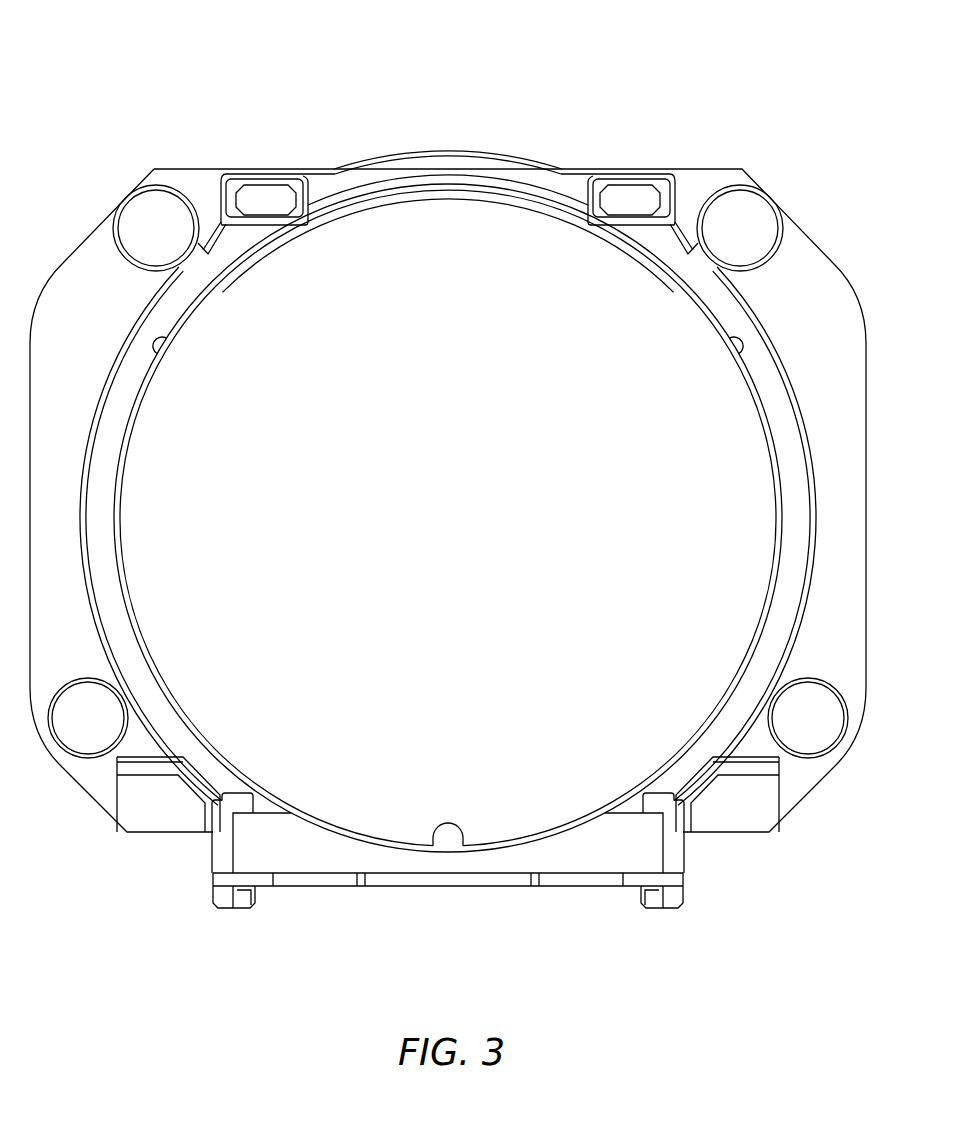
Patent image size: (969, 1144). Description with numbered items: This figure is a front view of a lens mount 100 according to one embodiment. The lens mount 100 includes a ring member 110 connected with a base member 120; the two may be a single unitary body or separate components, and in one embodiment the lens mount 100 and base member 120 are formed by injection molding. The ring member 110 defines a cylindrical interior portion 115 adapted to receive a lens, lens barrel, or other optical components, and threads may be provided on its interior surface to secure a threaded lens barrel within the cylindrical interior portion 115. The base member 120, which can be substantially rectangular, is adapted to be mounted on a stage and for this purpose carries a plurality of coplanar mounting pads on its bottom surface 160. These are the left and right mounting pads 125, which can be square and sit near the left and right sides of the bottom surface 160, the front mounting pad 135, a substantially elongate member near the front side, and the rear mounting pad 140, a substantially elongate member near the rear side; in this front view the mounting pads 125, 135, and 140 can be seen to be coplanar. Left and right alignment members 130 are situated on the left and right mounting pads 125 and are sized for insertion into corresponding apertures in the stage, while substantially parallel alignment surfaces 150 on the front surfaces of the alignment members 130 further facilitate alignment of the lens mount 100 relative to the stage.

The lens mount 100 is at (386, 86).
The ring member 110 is at (740, 320).
The cylindrical interior portion 115 is at (455, 268).
The base member 120 is at (213, 850).
The left and right mounting pads 125 is at (213, 880).
The alignment members 130 is at (232, 909).
The front mounting pad 135 is at (447, 887).
The rear mounting pad 140 is at (315, 887).
The alignment surfaces 150 is at (215, 900).
The bottom surface 160 is at (392, 922).